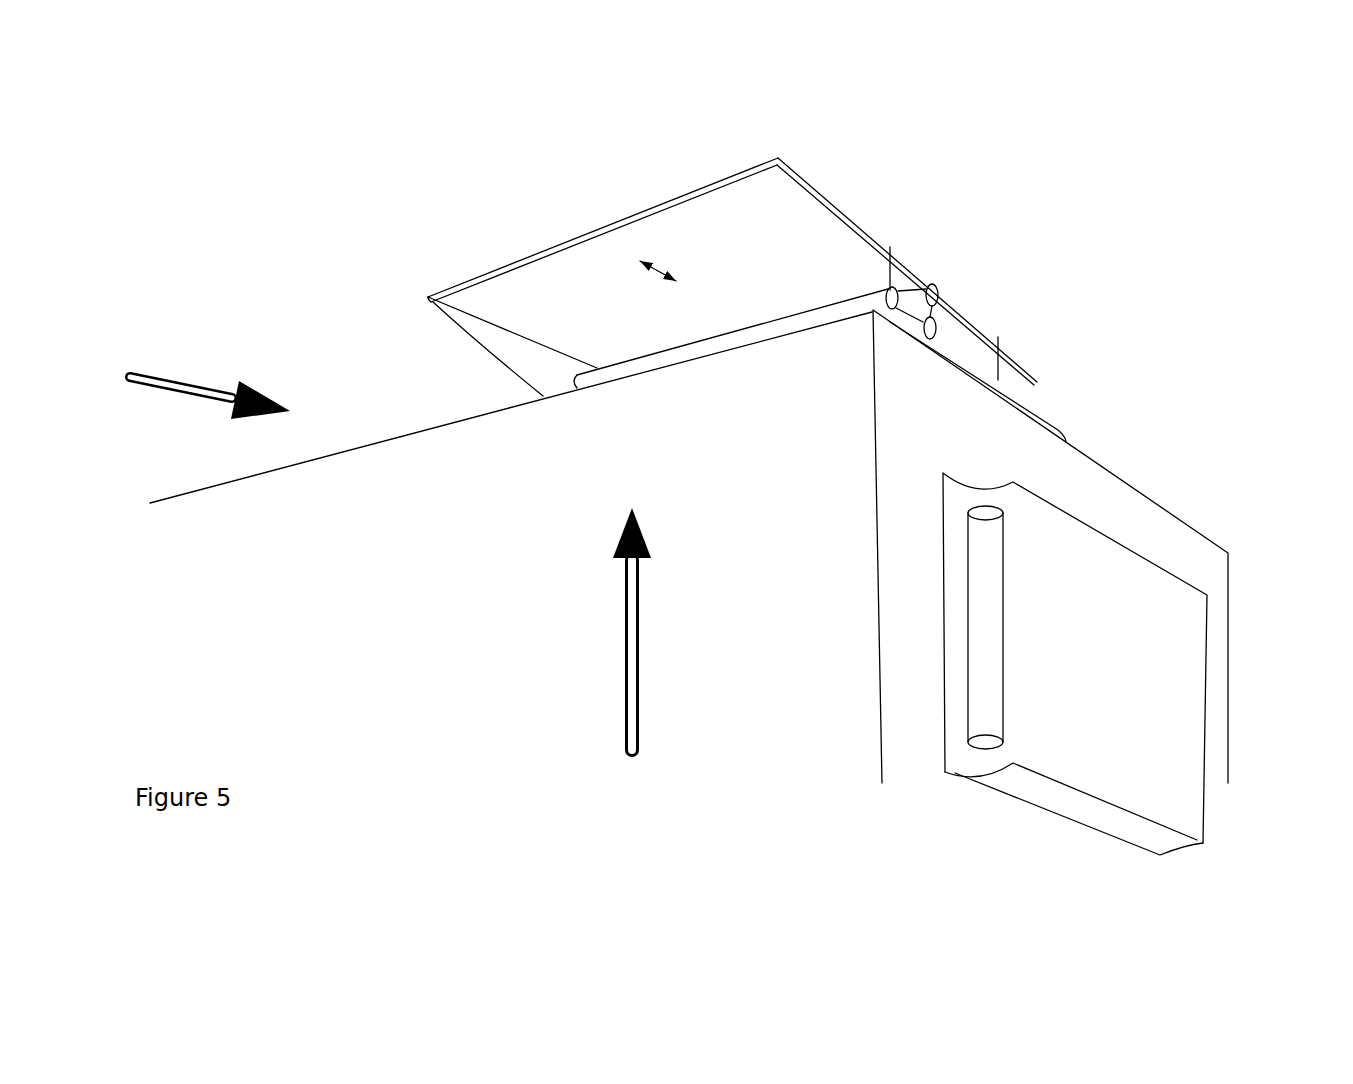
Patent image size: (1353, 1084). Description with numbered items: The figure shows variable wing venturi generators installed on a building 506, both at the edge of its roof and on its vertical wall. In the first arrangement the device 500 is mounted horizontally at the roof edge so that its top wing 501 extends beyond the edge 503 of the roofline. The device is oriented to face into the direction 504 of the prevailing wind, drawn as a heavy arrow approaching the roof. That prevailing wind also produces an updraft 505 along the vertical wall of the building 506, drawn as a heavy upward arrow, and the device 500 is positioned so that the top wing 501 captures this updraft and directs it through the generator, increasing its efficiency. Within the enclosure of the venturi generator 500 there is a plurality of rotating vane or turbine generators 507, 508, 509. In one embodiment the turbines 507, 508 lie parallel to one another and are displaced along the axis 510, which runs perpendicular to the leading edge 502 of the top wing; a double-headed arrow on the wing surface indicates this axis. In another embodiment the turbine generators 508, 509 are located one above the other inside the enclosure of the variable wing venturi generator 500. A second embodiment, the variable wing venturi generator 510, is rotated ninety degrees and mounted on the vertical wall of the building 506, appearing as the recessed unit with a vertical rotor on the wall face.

The variable wing venturi generator 500 is at (496, 268).
The top wing 501 is at (954, 290).
The leading edge 502 is at (556, 237).
The edge of the roofline 503 is at (467, 416).
The direction of the prevailing wind 504 is at (229, 383).
The updraft 505 is at (622, 702).
The building 506 is at (979, 546).
The rotating vane or turbine generator 507 is at (838, 297).
The rotating vane or turbine generator 508 is at (938, 329).
The rotating vane or turbine generator 509 is at (926, 286).
The axis / wall-mounted variable wing venturi generator 510 is at (674, 254).